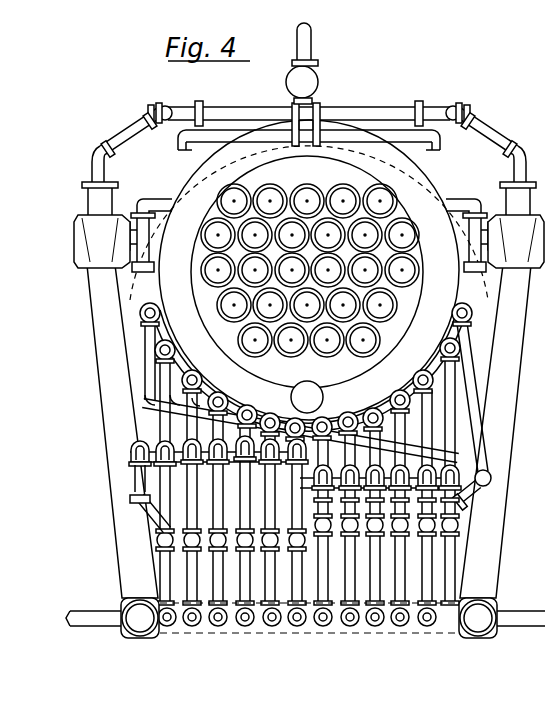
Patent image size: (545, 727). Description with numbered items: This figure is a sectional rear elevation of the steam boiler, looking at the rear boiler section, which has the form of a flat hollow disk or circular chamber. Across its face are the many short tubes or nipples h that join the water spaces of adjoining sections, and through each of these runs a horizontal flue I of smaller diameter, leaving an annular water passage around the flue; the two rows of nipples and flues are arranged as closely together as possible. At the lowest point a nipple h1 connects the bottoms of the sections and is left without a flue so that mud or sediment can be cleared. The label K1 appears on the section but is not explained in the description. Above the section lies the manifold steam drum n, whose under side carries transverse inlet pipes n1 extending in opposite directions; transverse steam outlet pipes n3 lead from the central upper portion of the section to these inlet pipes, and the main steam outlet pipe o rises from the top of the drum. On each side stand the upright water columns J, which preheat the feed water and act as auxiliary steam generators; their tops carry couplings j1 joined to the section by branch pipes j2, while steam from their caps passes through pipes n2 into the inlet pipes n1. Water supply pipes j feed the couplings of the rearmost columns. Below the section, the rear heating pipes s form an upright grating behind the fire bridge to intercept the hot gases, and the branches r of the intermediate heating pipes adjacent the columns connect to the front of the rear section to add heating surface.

The main steam outlet pipe o is at (312, 41).
The manifold steam drum n is at (162, 441).
The transverse inlet pipes n1 is at (268, 95).
The transverse steam outlet pipes n3 is at (378, 142).
The pipes n2 is at (309, 130).
The branch pipes j2 is at (456, 195).
The couplings j1 is at (86, 228).
The upright water columns J is at (300, 431).
The water supply pipes j is at (96, 622).
The nipples h is at (302, 197).
The nipples h1 is at (307, 397).
The horizontal flues I is at (310, 270).
The tube sheet K1 is at (380, 355).
The branches r is at (134, 473).
The rear heating pipes s is at (332, 590).